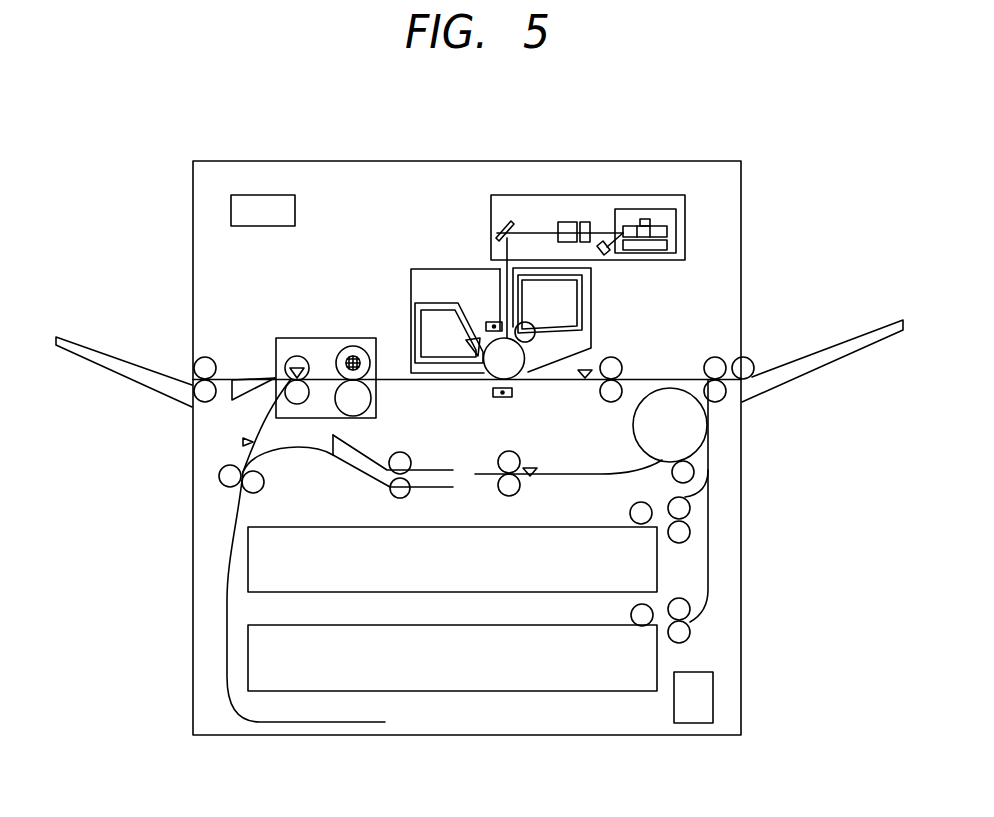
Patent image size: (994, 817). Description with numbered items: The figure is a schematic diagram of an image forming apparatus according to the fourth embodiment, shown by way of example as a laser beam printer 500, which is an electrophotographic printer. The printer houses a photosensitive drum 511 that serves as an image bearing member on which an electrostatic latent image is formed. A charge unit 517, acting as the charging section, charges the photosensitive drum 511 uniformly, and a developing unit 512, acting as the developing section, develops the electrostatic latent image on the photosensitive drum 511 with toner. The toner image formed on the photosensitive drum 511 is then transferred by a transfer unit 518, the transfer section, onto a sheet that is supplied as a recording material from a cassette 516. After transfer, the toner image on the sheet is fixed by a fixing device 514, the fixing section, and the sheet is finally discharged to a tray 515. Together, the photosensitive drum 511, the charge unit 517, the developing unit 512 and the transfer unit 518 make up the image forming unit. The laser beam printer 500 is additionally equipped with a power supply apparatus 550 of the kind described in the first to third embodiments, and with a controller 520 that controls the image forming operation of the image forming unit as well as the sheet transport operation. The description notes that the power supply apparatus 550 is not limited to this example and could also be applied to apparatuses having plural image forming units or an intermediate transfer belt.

The laser beam printer 500 is at (636, 161).
The photosensitive drum 511 is at (513, 361).
The developing unit 512 is at (533, 330).
The fixing device 514 is at (325, 338).
The tray 515 is at (112, 355).
The cassette 516 is at (640, 673).
The charge unit 517 is at (496, 322).
The transfer unit 518 is at (512, 394).
The controller 520 is at (263, 195).
The power supply apparatus 550 is at (713, 688).